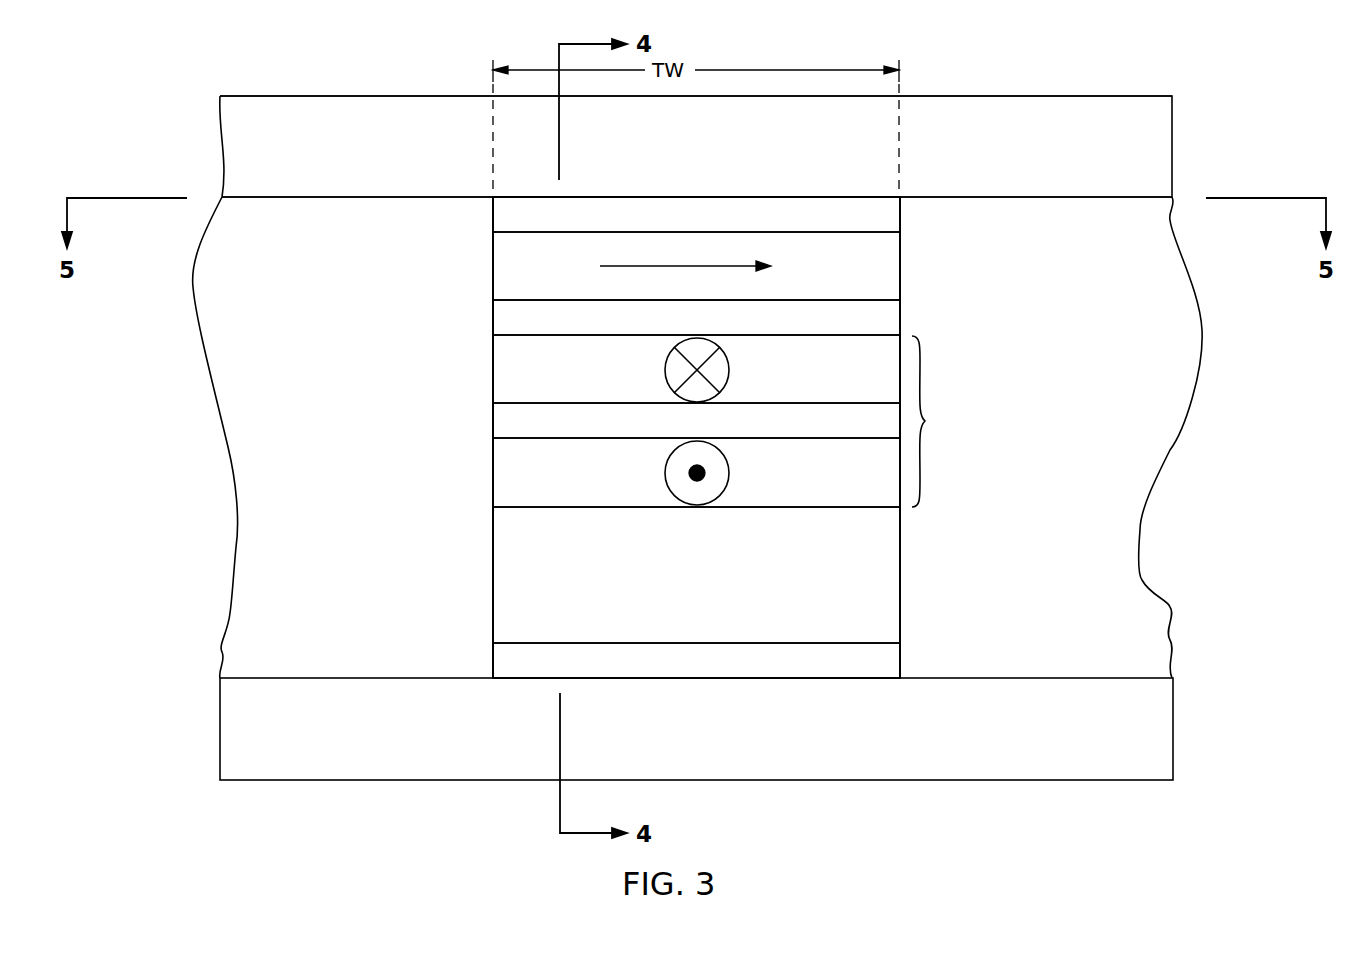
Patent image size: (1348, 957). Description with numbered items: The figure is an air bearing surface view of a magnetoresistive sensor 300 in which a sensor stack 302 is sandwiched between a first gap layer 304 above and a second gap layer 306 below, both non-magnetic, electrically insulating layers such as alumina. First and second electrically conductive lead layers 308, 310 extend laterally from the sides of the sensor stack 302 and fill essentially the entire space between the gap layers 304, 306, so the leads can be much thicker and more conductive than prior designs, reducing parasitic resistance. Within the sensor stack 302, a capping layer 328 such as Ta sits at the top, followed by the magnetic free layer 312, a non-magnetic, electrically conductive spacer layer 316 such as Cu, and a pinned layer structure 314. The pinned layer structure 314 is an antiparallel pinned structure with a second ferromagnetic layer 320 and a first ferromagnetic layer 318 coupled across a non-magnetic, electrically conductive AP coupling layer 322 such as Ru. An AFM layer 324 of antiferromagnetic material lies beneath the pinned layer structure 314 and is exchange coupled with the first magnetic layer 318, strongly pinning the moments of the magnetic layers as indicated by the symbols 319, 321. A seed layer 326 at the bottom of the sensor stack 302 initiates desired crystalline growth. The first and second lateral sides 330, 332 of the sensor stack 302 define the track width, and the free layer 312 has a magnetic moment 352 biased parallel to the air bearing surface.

The magnetoresistive sensor 300 is at (1109, 72).
The sensor stack 302 is at (478, 304).
The first gap layer 304 is at (597, 149).
The second gap layer 306 is at (755, 730).
The first electrically conductive lead layer 308 is at (1005, 400).
The second electrically conductive lead layer 310 is at (356, 438).
The magnetic free layer 312 is at (797, 268).
The pinned layer structure 314 is at (924, 373).
The spacer layer 316 is at (600, 318).
The first ferromagnetic layer 318 is at (765, 473).
The magnetic moment symbol of first magnetic layer 319 is at (665, 473).
The second ferromagnetic layer 320 is at (765, 372).
The magnetic moment symbol of second magnetic layer 321 is at (665, 370).
The AP coupling layer 322 is at (728, 423).
The AFM layer 324 is at (755, 575).
The seed layer 326 is at (765, 658).
The capping layer 328 is at (597, 215).
The first lateral side 330 is at (900, 285).
The second lateral side 332 is at (493, 380).
The magnetic moment of free layer 352 is at (616, 258).